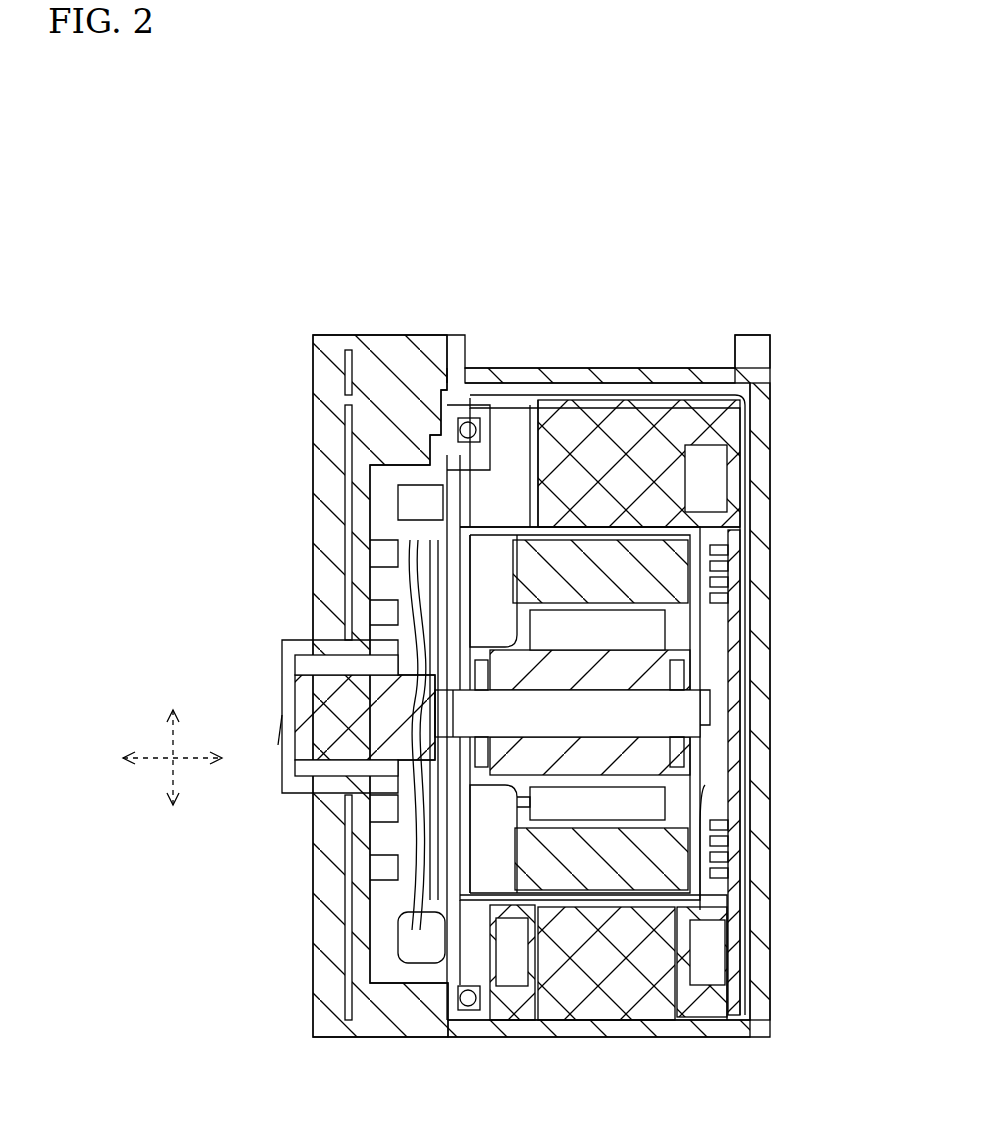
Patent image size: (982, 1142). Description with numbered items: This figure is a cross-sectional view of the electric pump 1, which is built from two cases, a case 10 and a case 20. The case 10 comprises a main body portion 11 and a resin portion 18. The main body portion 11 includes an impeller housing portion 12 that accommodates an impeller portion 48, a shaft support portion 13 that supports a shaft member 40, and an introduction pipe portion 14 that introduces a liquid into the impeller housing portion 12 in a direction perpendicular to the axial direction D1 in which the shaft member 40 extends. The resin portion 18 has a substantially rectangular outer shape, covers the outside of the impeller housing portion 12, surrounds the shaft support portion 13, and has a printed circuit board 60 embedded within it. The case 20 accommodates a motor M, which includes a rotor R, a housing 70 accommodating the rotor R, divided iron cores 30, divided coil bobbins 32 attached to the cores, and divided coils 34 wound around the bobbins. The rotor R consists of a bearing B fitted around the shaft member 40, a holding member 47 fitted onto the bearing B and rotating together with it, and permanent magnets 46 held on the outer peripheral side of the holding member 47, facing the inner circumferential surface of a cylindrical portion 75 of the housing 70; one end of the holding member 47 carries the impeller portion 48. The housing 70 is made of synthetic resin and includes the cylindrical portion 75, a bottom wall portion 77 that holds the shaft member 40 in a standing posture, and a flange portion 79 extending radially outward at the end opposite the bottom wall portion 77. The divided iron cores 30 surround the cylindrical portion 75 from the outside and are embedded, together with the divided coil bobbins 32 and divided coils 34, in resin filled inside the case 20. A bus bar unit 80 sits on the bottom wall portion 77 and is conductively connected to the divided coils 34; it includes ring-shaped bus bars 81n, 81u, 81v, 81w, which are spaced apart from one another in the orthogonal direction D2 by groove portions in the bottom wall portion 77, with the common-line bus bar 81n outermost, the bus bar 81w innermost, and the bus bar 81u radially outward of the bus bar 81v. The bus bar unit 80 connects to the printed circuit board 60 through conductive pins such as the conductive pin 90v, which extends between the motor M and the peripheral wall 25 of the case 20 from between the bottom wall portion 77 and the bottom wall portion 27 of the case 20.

The electric pump 1 is at (732, 300).
The case 10 is at (318, 958).
The main body portion 11 is at (390, 960).
The impeller housing portion 12 is at (398, 1025).
The shaft support portion 13 is at (283, 668).
The introduction pipe portion 14 is at (275, 720).
The resin portion 18 is at (325, 903).
The case 20 is at (770, 993).
The peripheral wall 25 is at (652, 370).
The bottom wall portion 27 is at (760, 945).
The divided iron cores 30 is at (583, 1030).
The divided coil bobbins 32 is at (512, 1030).
The divided coils 34 is at (712, 1020).
The shaft member 40 is at (680, 716).
The permanent magnets 46 is at (595, 955).
The holding member 47 is at (483, 790).
The impeller portion 48 is at (400, 812).
The printed circuit board 60 is at (340, 448).
The housing 70 is at (735, 750).
The cylindrical portion 75 is at (566, 520).
The bottom wall portion 77 is at (715, 776).
The flange portion 79 is at (465, 355).
The bus bar unit 80 is at (825, 808).
The bus bar 81w is at (728, 828).
The bus bar 81v is at (728, 843).
The bus bar 81u is at (728, 858).
The bus bar 81n is at (728, 872).
The conductive pin 90v is at (745, 430).
The rotor R is at (480, 635).
The bearing B is at (650, 683).
The motor M is at (655, 1030).
The axial direction D1 is at (160, 755).
The orthogonal direction D2 is at (178, 765).